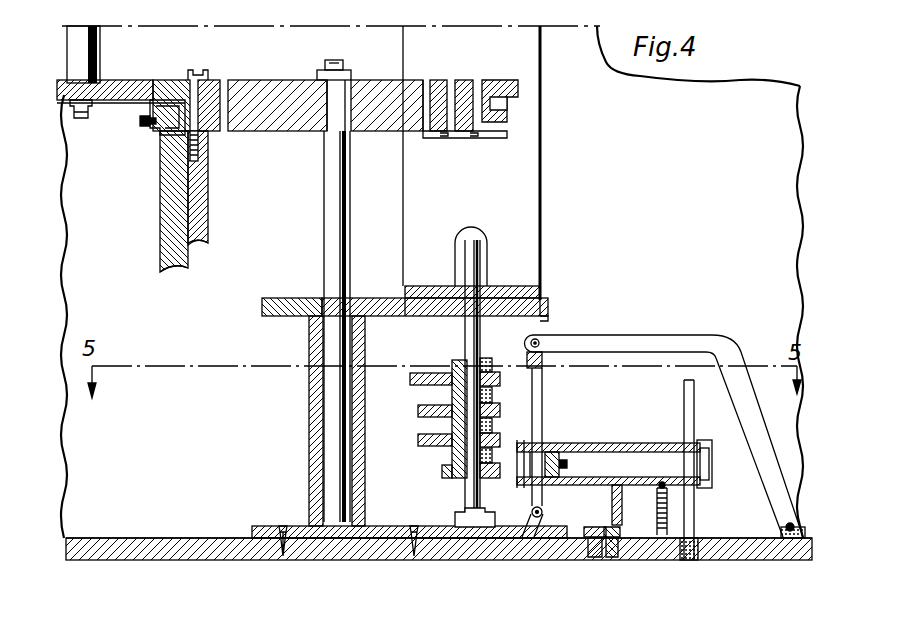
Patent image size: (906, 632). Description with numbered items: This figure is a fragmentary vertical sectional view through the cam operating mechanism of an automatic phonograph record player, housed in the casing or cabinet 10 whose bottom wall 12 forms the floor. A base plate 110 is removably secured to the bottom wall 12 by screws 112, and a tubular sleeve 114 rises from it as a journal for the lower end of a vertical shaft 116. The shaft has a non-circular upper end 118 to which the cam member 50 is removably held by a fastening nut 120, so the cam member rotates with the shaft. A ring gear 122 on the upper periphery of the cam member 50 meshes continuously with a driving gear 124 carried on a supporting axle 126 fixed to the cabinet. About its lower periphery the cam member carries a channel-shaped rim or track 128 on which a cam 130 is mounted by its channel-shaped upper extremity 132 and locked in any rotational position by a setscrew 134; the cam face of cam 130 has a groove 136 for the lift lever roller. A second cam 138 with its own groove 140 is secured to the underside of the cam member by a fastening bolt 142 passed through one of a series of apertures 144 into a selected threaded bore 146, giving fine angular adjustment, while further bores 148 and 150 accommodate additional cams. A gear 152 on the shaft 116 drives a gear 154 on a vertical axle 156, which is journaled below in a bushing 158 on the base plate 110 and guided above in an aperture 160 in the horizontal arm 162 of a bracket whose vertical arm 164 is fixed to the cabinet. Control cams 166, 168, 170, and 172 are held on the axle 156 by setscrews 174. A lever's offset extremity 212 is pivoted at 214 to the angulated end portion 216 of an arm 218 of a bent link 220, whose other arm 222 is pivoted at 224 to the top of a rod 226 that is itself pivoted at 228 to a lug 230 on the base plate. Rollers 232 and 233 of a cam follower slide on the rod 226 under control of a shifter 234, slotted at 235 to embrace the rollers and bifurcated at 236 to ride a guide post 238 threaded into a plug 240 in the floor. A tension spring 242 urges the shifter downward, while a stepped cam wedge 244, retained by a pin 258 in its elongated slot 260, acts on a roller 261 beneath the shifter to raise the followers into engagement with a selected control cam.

The casing or cabinet 10 is at (118, 520).
The bottom wall 12 is at (140, 538).
The cam member 50 is at (275, 92).
The base plate 110 is at (253, 526).
The screws 112 is at (282, 524).
The cylindrical or tubular sleeve 114 is at (309, 415).
The vertical shaft 116 is at (324, 180).
The non-circular upper end 118 is at (354, 90).
The fastening nut 120 is at (332, 68).
The ring gear 122 is at (520, 84).
The driving gear 124 is at (128, 80).
The supporting axle 126 is at (93, 78).
The annular channel-shaped rim or track 128 is at (508, 110).
The cam 130 is at (160, 200).
The channel-shaped upper extremity 132 is at (153, 130).
The setscrew 134 is at (140, 121).
The groove or track 136 is at (172, 274).
The second cam 138 is at (204, 218).
The groove 140 is at (204, 248).
The fastening bolt 142 is at (218, 100).
The apertures 144 is at (192, 95).
The internally threaded bores 146 is at (200, 148).
The bores 148 is at (220, 108).
The bores 150 is at (436, 88).
The gear 152 is at (290, 298).
The gear 154 is at (542, 304).
The vertical axle 156 is at (465, 330).
The journal bushing 158 is at (456, 518).
The guide aperture 160 is at (481, 286).
The horizontal arm 162 is at (526, 287).
The vertical arm 164 is at (524, 177).
The control cam 166 is at (410, 380).
The control cam 168 is at (418, 411).
The control cam 170 is at (418, 438).
The control cam 172 is at (442, 471).
The setscrews 174 is at (488, 358).
The laterally offset extremity 212 is at (784, 524).
The pivot 214 is at (793, 522).
The angulated end portion 216 is at (776, 540).
The arm 218 is at (762, 443).
The bent link 220 is at (716, 340).
The arm 222 is at (656, 335).
The pivot 224 is at (539, 340).
The shaft or rod 226 is at (543, 376).
The pivot 228 is at (542, 509).
The upstanding lug 230 is at (544, 524).
The roller 232 is at (562, 443).
The roller 233 is at (565, 466).
The shifter or shifter yoke 234 is at (608, 443).
The slot 235 is at (548, 442).
The bifurcated end 236 is at (707, 440).
The vertical guide post 238 is at (684, 383).
The plug 240 is at (684, 548).
The tension spring 242 is at (668, 518).
The stepped cam wedge 244 is at (623, 498).
The retaining pin 258 is at (582, 545).
The elongated slot 260 is at (612, 548).
The roller 261 is at (612, 477).